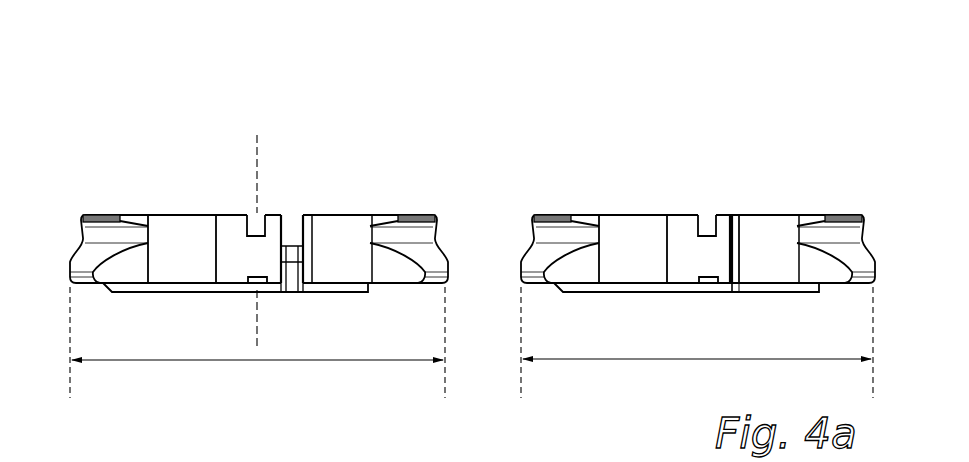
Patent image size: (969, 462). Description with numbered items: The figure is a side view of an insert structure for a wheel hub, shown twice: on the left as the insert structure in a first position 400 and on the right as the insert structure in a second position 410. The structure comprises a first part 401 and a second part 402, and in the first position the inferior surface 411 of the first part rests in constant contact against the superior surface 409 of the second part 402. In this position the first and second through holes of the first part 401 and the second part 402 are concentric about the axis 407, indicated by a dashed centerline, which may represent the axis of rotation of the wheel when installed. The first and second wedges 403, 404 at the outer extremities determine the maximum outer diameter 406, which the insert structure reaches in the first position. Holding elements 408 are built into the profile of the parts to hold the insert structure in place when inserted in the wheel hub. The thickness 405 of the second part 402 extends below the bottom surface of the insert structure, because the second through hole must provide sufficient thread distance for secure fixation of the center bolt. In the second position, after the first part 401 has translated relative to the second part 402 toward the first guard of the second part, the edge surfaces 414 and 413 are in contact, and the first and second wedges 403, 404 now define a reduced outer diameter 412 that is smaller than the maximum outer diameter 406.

The insert structure in a first position 400 is at (434, 163).
The first part 401 is at (338, 230).
The second part 402 is at (178, 226).
The first wedge 403 is at (432, 255).
The second wedge 404 is at (80, 263).
The thickness of the second part 405 is at (190, 292).
The maximum outer diameter 406 is at (357, 362).
The axis 407 is at (257, 160).
The holding elements 408 is at (118, 214).
The superior surface of the second part 409 is at (302, 216).
The insert structure in a second position 410 is at (857, 158).
The inferior surface of the first part 411 is at (303, 214).
The reduced outer diameter 412 is at (628, 361).
The edge surface 413 is at (739, 214).
The edge surface 414 is at (732, 214).